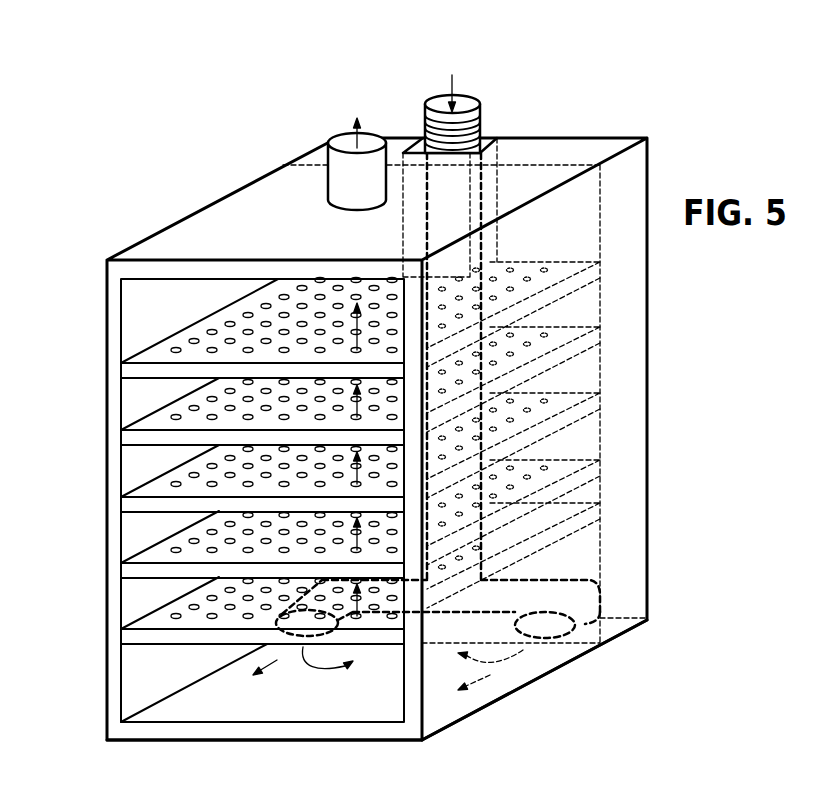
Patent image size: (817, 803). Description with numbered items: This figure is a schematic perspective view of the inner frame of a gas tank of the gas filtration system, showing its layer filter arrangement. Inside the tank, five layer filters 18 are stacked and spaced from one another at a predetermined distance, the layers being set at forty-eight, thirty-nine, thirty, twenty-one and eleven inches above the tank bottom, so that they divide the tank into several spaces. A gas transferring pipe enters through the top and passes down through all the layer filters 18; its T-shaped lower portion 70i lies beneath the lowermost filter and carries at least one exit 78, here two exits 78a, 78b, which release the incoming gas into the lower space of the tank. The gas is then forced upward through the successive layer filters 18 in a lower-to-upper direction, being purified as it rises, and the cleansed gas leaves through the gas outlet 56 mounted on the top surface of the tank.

The gas outlet 56 is at (338, 146).
The exit 78 is at (486, 154).
The exit 78a is at (563, 628).
The exit 78b is at (300, 637).
The lower portion 70i is at (575, 607).
The layer filter 18 is at (533, 487).